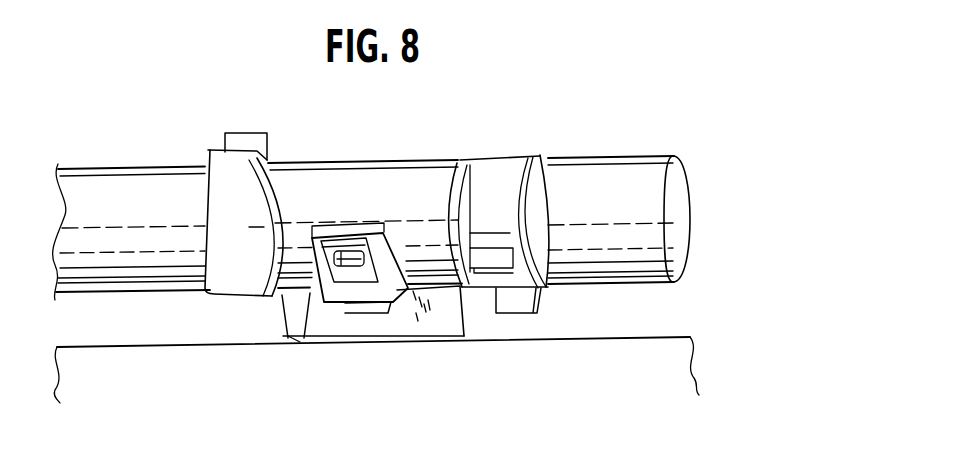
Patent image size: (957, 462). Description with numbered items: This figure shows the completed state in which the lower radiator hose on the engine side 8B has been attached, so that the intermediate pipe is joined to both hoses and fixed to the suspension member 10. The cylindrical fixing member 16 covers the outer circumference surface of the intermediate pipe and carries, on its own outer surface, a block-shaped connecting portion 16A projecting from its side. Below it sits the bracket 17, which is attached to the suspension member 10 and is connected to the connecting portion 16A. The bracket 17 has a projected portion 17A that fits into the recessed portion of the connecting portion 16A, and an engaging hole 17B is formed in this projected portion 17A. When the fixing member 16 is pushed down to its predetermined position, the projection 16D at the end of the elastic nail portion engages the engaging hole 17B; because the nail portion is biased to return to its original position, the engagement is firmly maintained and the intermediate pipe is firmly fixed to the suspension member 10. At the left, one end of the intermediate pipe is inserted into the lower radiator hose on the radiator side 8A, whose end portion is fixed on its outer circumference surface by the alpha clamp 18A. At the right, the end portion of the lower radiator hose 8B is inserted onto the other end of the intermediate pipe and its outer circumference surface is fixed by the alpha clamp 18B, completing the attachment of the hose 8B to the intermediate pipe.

The lower radiator hose on the radiator side 8A is at (104, 188).
The lower radiator hose on the engine side 8B is at (618, 173).
The suspension member 10 is at (133, 363).
The fixing member 16 is at (423, 180).
The connecting portion 16A is at (332, 290).
The projection 16D is at (352, 263).
The bracket 17 is at (438, 323).
The projected portion 17A is at (368, 305).
The engaging hole 17B is at (345, 252).
The alpha clamp 18A is at (213, 212).
The alpha clamp 18B is at (510, 172).